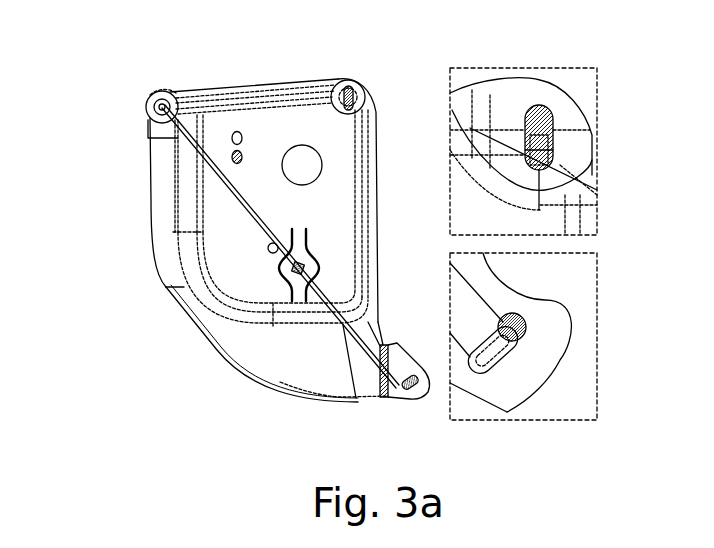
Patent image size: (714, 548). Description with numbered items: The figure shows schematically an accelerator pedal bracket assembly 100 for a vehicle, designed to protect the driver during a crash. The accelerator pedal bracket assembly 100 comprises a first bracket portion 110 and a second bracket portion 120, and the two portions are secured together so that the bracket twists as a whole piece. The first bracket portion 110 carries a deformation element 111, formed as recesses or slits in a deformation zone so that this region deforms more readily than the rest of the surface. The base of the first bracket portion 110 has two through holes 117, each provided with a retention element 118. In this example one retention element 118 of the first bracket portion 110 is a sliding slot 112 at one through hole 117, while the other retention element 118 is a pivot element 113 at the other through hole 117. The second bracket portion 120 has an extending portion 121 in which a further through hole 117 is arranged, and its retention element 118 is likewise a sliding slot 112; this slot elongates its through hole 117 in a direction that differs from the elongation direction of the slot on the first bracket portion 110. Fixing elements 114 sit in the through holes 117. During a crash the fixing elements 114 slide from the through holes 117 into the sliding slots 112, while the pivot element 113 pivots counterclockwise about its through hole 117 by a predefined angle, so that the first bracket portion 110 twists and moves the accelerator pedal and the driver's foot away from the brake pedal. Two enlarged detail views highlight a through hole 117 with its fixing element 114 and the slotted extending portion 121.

The accelerator pedal bracket assembly 100 is at (136, 72).
The first bracket portion 110 is at (152, 186).
The deformation element 111 is at (272, 258).
The sliding slot 112 is at (362, 93).
The pivot element 113 is at (145, 113).
The fixing element 114 is at (592, 130).
The through hole 117 is at (150, 105).
The retention element 118 is at (167, 92).
The second bracket portion 120 is at (218, 355).
The extending portion 121 is at (517, 372).